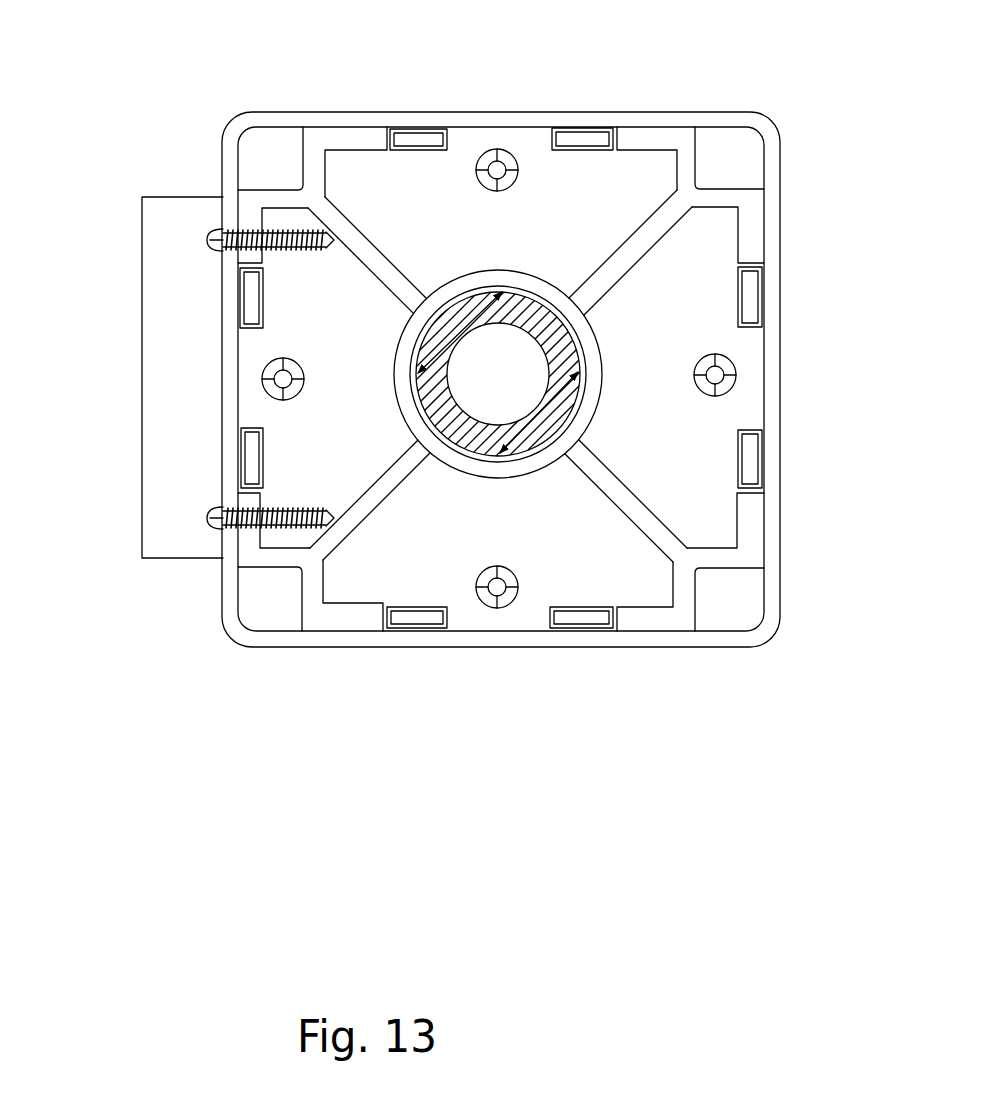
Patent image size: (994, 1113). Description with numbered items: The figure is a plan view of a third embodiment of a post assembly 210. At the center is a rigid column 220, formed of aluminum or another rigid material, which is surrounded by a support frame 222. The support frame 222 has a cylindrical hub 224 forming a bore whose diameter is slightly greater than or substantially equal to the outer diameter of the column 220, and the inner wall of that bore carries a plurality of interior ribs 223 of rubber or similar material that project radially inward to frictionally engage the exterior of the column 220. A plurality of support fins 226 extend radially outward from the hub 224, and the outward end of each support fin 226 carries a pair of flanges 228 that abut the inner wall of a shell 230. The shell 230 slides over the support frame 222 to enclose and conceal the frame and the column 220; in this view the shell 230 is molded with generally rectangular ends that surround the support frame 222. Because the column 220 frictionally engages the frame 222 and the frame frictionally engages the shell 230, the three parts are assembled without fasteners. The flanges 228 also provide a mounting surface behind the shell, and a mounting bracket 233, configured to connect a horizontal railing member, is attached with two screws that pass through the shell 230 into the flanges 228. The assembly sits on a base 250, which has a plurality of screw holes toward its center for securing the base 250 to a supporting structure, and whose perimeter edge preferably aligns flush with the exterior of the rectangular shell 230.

The post assembly 210 is at (203, 68).
The column 220 is at (490, 440).
The support frame 222 is at (400, 253).
The interior ribs 223 is at (418, 373).
The cylindrical hub 224 is at (592, 347).
The support fins 226 is at (640, 242).
The flanges 228 is at (352, 147).
The shell 230 is at (487, 637).
The mounting bracket 233 is at (210, 389).
The base 250 is at (378, 578).